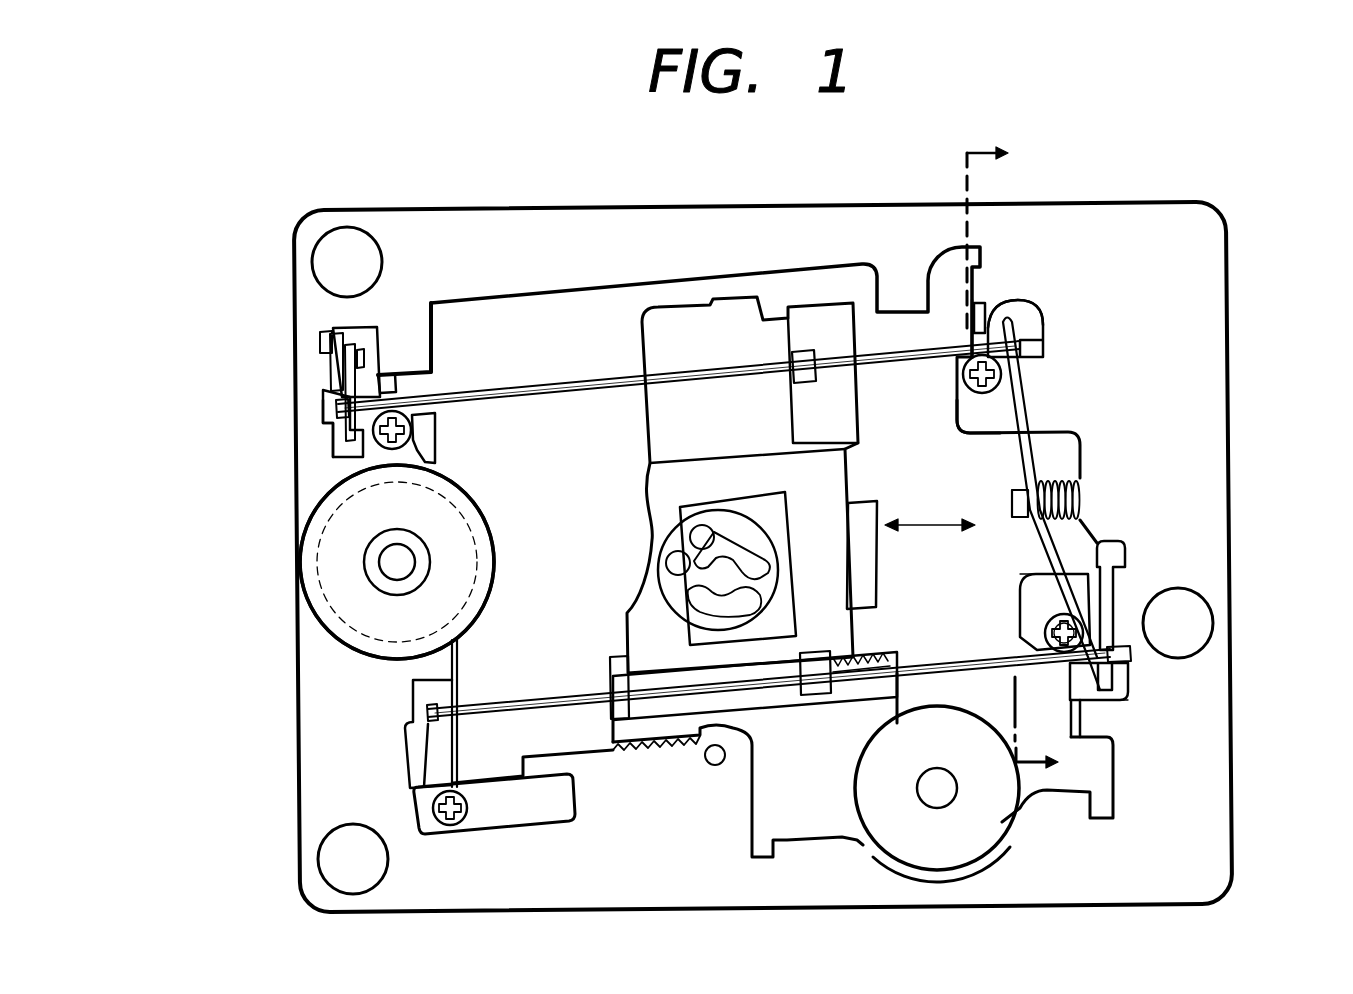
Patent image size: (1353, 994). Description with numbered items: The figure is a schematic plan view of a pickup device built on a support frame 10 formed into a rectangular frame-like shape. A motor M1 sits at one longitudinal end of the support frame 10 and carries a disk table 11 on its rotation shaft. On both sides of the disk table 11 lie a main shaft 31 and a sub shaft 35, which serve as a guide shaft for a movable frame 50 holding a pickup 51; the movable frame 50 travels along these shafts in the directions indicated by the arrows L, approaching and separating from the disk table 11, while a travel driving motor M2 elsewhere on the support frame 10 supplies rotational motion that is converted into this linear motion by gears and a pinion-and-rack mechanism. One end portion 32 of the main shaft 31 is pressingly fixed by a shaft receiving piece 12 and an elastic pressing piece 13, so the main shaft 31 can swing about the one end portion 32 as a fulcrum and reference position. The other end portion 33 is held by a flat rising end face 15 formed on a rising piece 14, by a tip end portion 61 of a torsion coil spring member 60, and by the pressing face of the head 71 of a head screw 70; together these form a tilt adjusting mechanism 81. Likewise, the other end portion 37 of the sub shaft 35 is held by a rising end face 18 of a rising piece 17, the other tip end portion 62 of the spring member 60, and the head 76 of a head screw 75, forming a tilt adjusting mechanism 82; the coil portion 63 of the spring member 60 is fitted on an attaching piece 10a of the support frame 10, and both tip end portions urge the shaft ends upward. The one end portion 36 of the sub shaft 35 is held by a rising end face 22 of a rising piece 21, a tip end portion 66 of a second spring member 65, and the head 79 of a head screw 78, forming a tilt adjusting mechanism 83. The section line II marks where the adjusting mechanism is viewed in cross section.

The support frame 10 is at (1230, 410).
The attaching piece 10a is at (1012, 498).
The disk table 11 is at (492, 520).
The shaft receiving piece 12 is at (459, 690).
The elastic pressing piece 13 is at (462, 753).
The rising piece 14 is at (1068, 673).
The rising end face 15 is at (1097, 700).
The rising piece 17 is at (968, 335).
The rising end face 18 is at (967, 344).
The rising piece 21 is at (405, 366).
The rising end face 22 is at (396, 393).
The main shaft 31 is at (566, 690).
The one end portion of the main shaft 32 is at (413, 716).
The other end portion of the main shaft 33 is at (1135, 665).
The sub shaft 35 is at (560, 394).
The one end portion of the sub shaft 36 is at (330, 436).
The other end portion of the sub shaft 37 is at (1025, 308).
The movable frame 50 is at (858, 464).
The pickup 51 is at (690, 552).
The spring member 60 is at (1017, 521).
The tip end portion 61 is at (1125, 562).
The other tip end portion 62 is at (1026, 390).
The coil portion 63 is at (1080, 456).
The spring member 65 is at (312, 360).
The tip end portion 66 is at (327, 392).
The head screw 70 is at (1034, 633).
The head 71 is at (1062, 592).
The head screw 75 is at (955, 385).
The head 76 is at (978, 405).
The head screw 78 is at (436, 446).
The head 79 is at (432, 428).
The tilt adjusting mechanism 81 is at (1143, 672).
The tilt adjusting mechanism 82 is at (998, 305).
The tilt adjusting mechanism 83 is at (316, 460).
The motor M1 is at (322, 602).
The travel driving motor M2 is at (1005, 852).
The arrows L is at (930, 513).
The section line II is at (1030, 459).